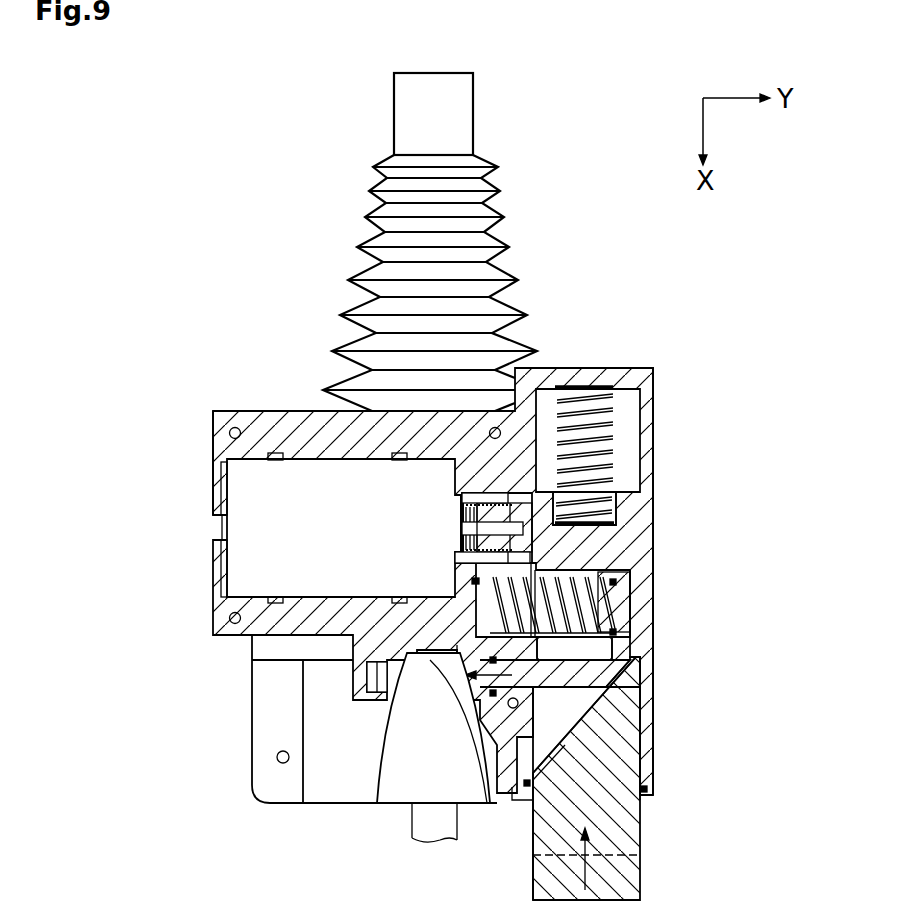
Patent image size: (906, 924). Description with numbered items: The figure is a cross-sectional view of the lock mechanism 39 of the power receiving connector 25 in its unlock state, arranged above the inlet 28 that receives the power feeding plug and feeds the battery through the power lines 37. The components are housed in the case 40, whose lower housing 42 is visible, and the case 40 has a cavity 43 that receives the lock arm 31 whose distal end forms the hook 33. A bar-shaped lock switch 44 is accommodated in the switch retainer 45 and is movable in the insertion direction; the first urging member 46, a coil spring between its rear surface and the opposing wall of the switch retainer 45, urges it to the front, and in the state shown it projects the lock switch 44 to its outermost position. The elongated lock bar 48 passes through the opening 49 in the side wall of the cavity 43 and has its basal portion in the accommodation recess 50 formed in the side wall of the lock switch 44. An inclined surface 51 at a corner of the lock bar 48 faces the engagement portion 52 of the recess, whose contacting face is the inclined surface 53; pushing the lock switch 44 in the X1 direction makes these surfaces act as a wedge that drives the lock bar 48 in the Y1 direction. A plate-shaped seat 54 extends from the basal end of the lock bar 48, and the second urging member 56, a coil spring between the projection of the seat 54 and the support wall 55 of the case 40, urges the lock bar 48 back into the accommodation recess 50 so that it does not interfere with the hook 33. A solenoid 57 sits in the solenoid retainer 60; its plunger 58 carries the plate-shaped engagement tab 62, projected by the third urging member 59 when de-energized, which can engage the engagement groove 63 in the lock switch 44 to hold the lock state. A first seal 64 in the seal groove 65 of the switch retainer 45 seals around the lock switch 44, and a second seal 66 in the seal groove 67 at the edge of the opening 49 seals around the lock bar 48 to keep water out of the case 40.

The power receiving connector 25 is at (216, 650).
The inlet 28 is at (252, 727).
The lock arm 31 is at (412, 820).
The hook 33 is at (395, 752).
The power lines 37 is at (500, 213).
The lock mechanism 39 is at (233, 410).
The case 40 is at (222, 430).
The lower housing 42 is at (327, 463).
The cavity 43 is at (392, 695).
The lock switch 44 is at (640, 846).
The switch retainer 45 is at (641, 699).
The first urging member 46 is at (620, 432).
The lock bar 48 is at (555, 694).
The opening 49 is at (480, 755).
The accommodation recess 50 is at (628, 608).
The inclined surface 51 is at (640, 672).
The engagement portion 52 is at (600, 712).
The inclined surface 53 is at (560, 755).
The seat 54 is at (625, 580).
The support wall 55 is at (460, 572).
The second urging member 56 is at (582, 572).
The solenoid 57 is at (240, 499).
The plunger 58 is at (462, 523).
The third urging member 59 is at (462, 497).
The solenoid retainer 60 is at (238, 590).
The engagement tab 62 is at (505, 503).
The engagement groove 63 is at (545, 650).
The first seal 64 is at (517, 805).
The seal groove 65 is at (645, 795).
The second seal 66 is at (478, 700).
The seal groove 67 is at (457, 645).
The X1 direction X1 is at (587, 873).
The Y1 direction Y1 is at (462, 662).